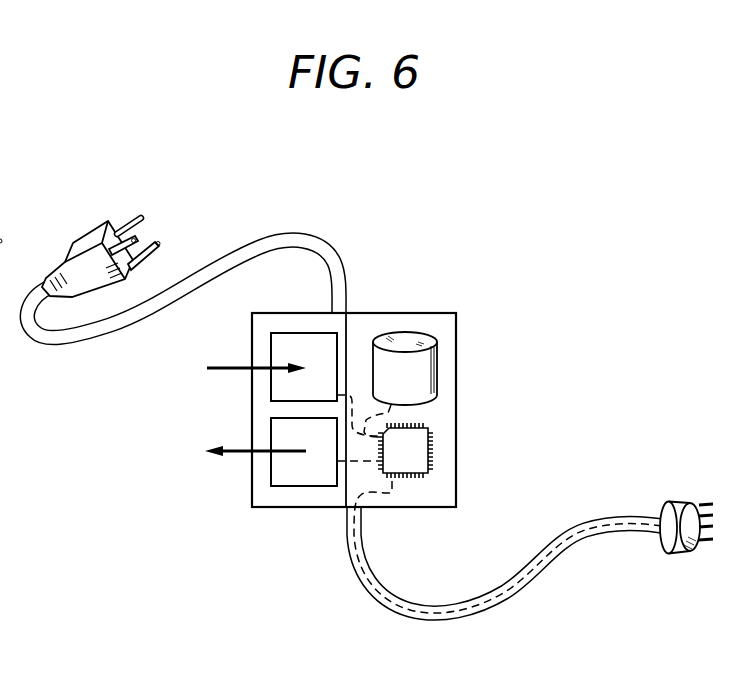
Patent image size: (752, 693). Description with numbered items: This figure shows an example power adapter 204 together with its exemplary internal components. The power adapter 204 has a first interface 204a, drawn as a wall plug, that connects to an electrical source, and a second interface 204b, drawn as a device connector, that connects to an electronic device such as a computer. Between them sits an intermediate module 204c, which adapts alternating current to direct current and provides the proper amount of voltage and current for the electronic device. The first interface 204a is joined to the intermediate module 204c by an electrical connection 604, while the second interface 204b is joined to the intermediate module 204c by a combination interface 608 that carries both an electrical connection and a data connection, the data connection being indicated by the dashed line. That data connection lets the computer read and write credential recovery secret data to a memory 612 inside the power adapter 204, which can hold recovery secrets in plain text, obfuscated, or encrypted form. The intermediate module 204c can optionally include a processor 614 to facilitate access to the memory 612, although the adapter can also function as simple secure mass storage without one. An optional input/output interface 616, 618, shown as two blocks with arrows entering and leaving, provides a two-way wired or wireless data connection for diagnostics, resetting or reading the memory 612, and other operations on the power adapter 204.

The power adapter 204 is at (499, 195).
The first interface 204a is at (92, 240).
The second interface 204b is at (678, 502).
The intermediate module 204c is at (457, 365).
The electrical connection 604 is at (240, 252).
The combination interface 608 is at (473, 620).
The memory 612 is at (410, 338).
The processor 614 is at (417, 449).
The input/output interface 616 is at (298, 474).
The input/output interface 618 is at (293, 342).